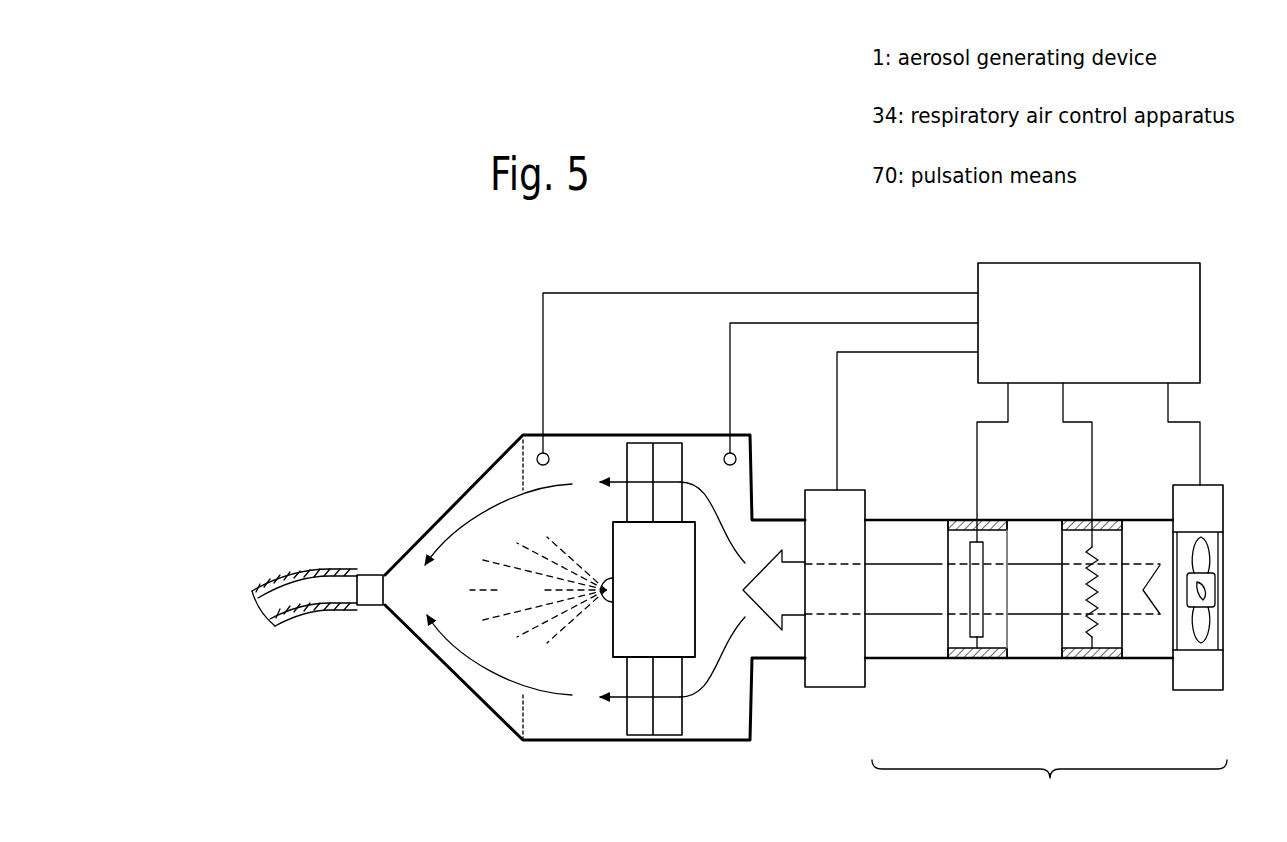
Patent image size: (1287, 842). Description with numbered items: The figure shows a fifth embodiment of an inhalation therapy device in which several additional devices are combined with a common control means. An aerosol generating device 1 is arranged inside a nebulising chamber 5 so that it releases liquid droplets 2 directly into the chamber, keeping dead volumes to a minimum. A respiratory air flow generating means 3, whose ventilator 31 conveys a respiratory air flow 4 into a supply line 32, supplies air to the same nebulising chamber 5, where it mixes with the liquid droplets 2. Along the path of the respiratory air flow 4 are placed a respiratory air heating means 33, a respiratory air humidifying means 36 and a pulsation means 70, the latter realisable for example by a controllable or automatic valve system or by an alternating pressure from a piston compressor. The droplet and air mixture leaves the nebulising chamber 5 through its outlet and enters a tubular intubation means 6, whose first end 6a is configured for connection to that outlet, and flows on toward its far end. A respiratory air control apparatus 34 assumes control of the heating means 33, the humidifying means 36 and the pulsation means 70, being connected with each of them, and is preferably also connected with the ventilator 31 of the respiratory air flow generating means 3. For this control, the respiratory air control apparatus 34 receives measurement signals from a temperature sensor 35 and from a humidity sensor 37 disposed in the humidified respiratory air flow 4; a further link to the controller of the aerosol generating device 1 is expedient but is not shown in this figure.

The aerosol generating device 1 is at (662, 607).
The liquid droplets 2 is at (526, 607).
The respiratory air flow generating means 3 is at (1049, 789).
The respiratory air flow 4 is at (914, 607).
The nebulising chamber 5 is at (442, 480).
The tubular intubation means 6 is at (267, 570).
The first end of the intubation means 6a is at (367, 574).
The ventilator 31 is at (1207, 692).
The supply line 32 is at (1031, 660).
The respiratory air heating means 33 is at (1092, 660).
The respiratory air control apparatus 34 is at (1093, 339).
The temperature sensor 35 is at (549, 456).
The respiratory air humidifying means 36 is at (966, 660).
The humidity sensor 37 is at (736, 459).
The pulsation means 70 is at (829, 688).